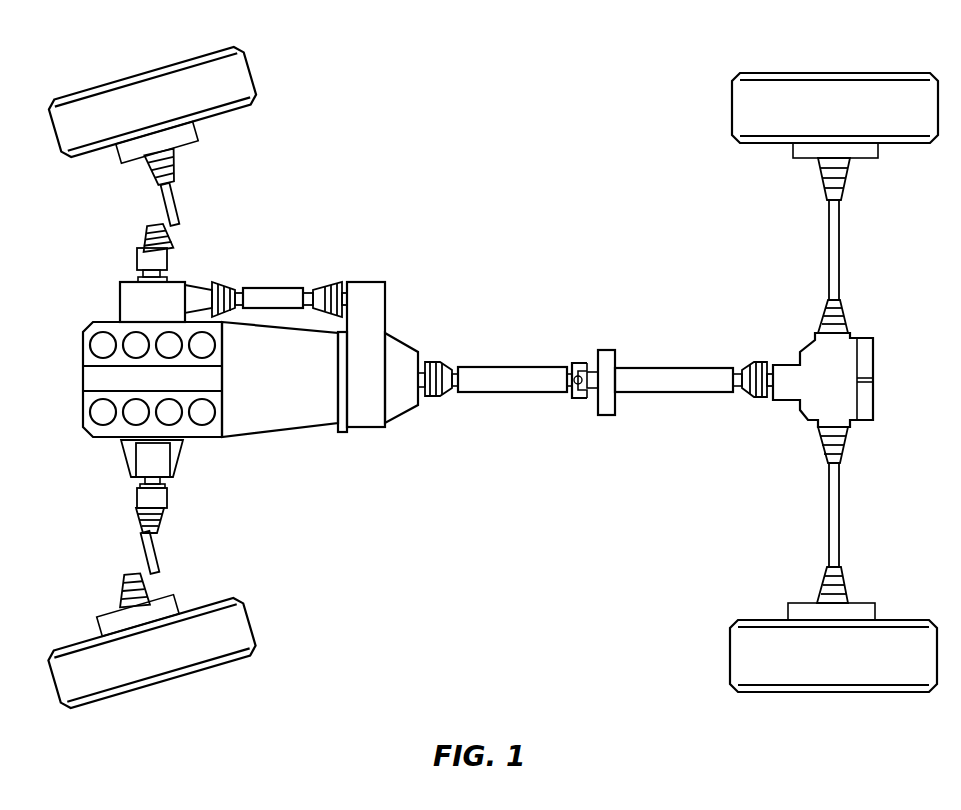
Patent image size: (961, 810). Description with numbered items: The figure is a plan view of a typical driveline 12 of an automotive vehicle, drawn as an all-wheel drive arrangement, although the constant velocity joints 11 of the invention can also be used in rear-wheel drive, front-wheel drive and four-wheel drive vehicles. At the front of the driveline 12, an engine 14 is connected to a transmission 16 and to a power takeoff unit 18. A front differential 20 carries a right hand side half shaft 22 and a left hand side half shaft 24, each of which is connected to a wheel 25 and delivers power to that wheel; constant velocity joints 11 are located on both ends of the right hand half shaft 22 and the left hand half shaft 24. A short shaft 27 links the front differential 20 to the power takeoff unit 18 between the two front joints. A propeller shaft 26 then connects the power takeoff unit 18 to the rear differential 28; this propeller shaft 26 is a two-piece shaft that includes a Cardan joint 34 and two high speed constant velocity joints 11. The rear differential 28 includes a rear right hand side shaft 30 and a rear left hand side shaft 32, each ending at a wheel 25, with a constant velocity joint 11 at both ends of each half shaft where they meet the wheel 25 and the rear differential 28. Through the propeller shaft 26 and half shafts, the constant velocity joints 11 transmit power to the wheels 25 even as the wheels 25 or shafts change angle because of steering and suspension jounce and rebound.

The constant velocity joint 11 is at (182, 165).
The driveline 12 is at (494, 84).
The engine 14 is at (105, 432).
The transmission 16 is at (283, 420).
The power takeoff unit 18 is at (385, 292).
The front differential 20 is at (120, 292).
The right hand side half shaft 22 is at (168, 202).
The left hand side half shaft 24 is at (138, 550).
The wheel 25 is at (248, 75).
The propeller shaft 26 is at (532, 400).
The intermediate shaft 27 is at (265, 294).
The rear differential 28 is at (815, 405).
The rear right hand side shaft 30 is at (840, 244).
The rear left hand side shaft 32 is at (840, 510).
The Cardan joint 34 is at (585, 400).